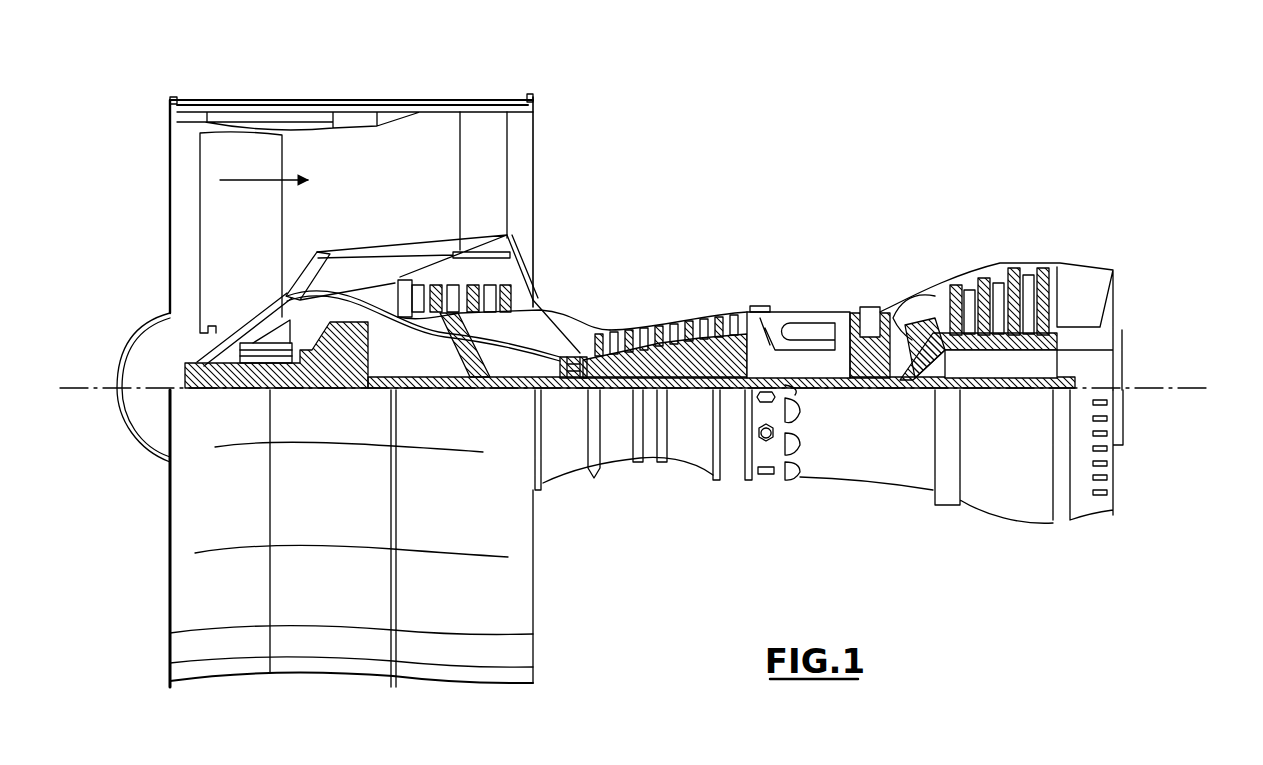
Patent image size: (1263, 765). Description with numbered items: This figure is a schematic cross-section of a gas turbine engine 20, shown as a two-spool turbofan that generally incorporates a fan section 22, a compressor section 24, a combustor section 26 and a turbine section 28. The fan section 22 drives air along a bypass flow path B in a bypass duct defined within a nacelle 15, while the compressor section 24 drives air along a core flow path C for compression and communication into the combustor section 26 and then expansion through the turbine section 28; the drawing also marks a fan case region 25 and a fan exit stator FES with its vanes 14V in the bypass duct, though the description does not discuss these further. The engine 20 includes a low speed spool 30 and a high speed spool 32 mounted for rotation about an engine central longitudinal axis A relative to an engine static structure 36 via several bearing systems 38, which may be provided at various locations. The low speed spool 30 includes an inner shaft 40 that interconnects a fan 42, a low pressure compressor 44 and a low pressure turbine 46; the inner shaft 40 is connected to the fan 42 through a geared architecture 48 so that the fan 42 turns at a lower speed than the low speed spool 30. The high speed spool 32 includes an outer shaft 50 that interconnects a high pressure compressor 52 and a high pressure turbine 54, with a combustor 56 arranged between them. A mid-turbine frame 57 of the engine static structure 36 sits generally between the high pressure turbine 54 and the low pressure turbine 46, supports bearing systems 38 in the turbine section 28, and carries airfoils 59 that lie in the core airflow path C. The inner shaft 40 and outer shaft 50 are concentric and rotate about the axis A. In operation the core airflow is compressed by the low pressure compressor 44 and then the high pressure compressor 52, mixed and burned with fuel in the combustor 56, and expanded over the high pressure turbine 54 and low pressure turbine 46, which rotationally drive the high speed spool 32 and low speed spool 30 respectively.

The gas turbine engine 20 is at (822, 146).
The fan section 22 is at (280, 95).
The nacelle 15 is at (352, 108).
The fan case rear 25 is at (542, 176).
The fan 42 is at (226, 234).
The fan exit stator vanes 14V is at (398, 282).
The low pressure compressor 44 is at (455, 298).
The compressor section 24 is at (655, 311).
The high pressure compressor 52 is at (668, 350).
The high speed spool 32 is at (735, 332).
The combustor section 26 is at (831, 303).
The combustor 56 is at (803, 330).
The high pressure turbine 54 is at (868, 312).
The mid-turbine frame 57 is at (915, 298).
The turbine section 28 is at (1001, 288).
The low pressure turbine 46 is at (995, 272).
The airfoils 59 is at (948, 352).
The geared architecture 48 is at (350, 375).
The bearing systems 38 is at (485, 378).
The inner shaft 40 is at (550, 392).
The low speed spool 30 is at (690, 400).
The engine static structure 36 is at (732, 484).
The outer shaft 50 is at (812, 380).
The engine central longitudinal axis A is at (1208, 388).
The bypass flow path B is at (262, 180).
The core flow path C is at (350, 292).
The fan exit stator FES is at (318, 252).